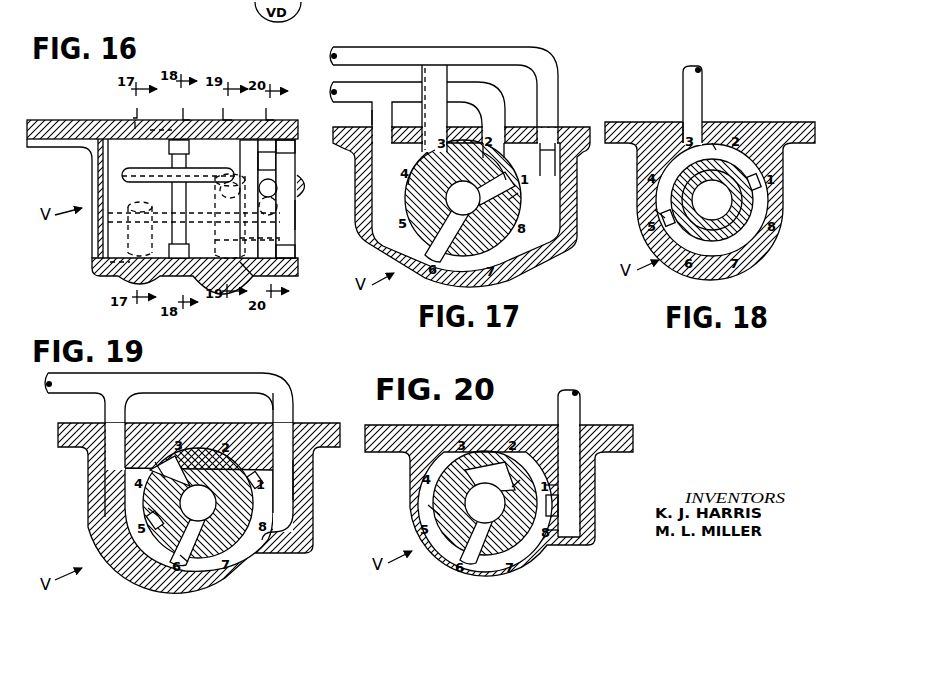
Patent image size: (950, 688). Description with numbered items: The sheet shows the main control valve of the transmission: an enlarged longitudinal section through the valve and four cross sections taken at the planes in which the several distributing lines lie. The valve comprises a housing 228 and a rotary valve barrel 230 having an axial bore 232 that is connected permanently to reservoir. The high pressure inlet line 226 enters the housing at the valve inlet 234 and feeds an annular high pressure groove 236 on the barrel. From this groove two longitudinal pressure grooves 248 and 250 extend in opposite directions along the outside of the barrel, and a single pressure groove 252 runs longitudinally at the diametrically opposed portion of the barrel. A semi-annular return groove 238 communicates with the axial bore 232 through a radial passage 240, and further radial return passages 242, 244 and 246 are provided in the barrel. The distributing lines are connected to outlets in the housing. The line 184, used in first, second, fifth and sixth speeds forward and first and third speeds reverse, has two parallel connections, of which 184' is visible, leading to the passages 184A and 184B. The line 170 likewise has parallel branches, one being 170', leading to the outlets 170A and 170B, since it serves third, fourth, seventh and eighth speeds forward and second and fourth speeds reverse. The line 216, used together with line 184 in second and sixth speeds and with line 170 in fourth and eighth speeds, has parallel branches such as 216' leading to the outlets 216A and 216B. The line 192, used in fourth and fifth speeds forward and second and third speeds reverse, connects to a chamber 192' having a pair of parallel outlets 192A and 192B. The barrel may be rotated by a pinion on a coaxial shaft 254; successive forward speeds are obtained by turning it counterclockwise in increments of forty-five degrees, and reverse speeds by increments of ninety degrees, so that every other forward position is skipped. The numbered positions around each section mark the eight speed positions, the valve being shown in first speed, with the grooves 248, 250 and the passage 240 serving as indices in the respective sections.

In FIG. 16, the distributing line 170 is at (152, 106).
In FIG. 17, the distributing line 170 is at (444, 86).
In FIG. 17, the parallel branch connection 170' is at (423, 100).
In FIG. 17, the valve passage or outlet 170A is at (437, 167).
In FIG. 16, the valve passage or outlet 170B is at (112, 268).
In FIG. 17, the valve passage or outlet 170B is at (555, 158).
In FIG. 16, the distributing line 184 is at (116, 115).
In FIG. 17, the distributing line 184 is at (400, 105).
In FIG. 17, the parallel connection 184' is at (338, 113).
In FIG. 16, the valve passage or distributing outlet 184A is at (296, 218).
In FIG. 17, the valve passage or distributing outlet 184B is at (487, 167).
In FIG. 16, the distributing line 192 is at (283, 107).
In FIG. 20, the distributing line 192 is at (593, 463).
In FIG. 20, the valve passage or chamber 192' is at (593, 503).
In FIG. 20, the branch or outlet 192A is at (558, 485).
In FIG. 20, the branch or outlet 192B is at (560, 530).
In FIG. 16, the distributing line 216 is at (239, 107).
In FIG. 19, the distributing line 216 is at (169, 380).
In FIG. 19, the parallel branch 216' is at (79, 404).
In FIG. 19, the valve passage or outlet 216A is at (105, 465).
In FIG. 19, the valve passage or outlet 216B is at (287, 475).
In FIG. 16, the pressure-receiving inlet line 226 is at (199, 107).
In FIG. 18, the pressure-receiving inlet line 226 is at (703, 80).
In FIG. 16, the housing 228 is at (57, 124).
In FIG. 17, the housing 228 is at (560, 250).
In FIG. 18, the housing 228 is at (763, 258).
In FIG. 19, the housing 228 is at (90, 483).
In FIG. 20, the housing 228 is at (410, 482).
In FIG. 16, the rotary valve barrel 230 is at (118, 149).
In FIG. 17, the rotary valve barrel 230 is at (440, 243).
In FIG. 18, the rotary valve barrel 230 is at (750, 210).
In FIG. 19, the rotary valve barrel 230 is at (208, 447).
In FIG. 20, the rotary valve barrel 230 is at (458, 550).
In FIG. 16, the axial bore 232 is at (98, 216).
In FIG. 17, the axial bore 232 is at (478, 207).
In FIG. 18, the axial bore 232 is at (727, 209).
In FIG. 19, the axial bore 232 is at (212, 512).
In FIG. 20, the axial bore 232 is at (499, 512).
In FIG. 16, the valve inlet 234 is at (146, 130).
In FIG. 18, the valve inlet 234 is at (683, 130).
In FIG. 16, the annular high pressure groove 236 is at (175, 149).
In FIG. 18, the annular high pressure groove 236 is at (714, 147).
In FIG. 16, the semi-annular reservoir or return groove 238 is at (270, 250).
In FIG. 20, the semi-annular reservoir or return groove 238 is at (518, 548).
In FIG. 16, the radial passage 240 is at (262, 173).
In FIG. 20, the radial passage 240 is at (512, 487).
In FIG. 16, the radial return passage 242 is at (152, 210).
In FIG. 17, the radial return passage 242 is at (503, 265).
In FIG. 16, the radial return passage 244 is at (235, 180).
In FIG. 19, the radial return passage 244 is at (162, 472).
In FIG. 16, the radial return passage 246 is at (258, 266).
In FIG. 19, the radial return passage 246 is at (183, 560).
In FIG. 16, the longitudinal pressure groove 248 is at (122, 173).
In FIG. 17, the longitudinal pressure groove 248 is at (518, 193).
In FIG. 16, the longitudinal pressure groove 250 is at (205, 172).
In FIG. 18, the longitudinal pressure groove 250 is at (762, 190).
In FIG. 19, the longitudinal pressure groove 250 is at (245, 478).
In FIG. 16, the single pressure groove 252 is at (270, 238).
In FIG. 18, the single pressure groove 252 is at (660, 215).
In FIG. 19, the single pressure groove 252 is at (150, 512).
In FIG. 20, the single pressure groove 252 is at (440, 512).
In FIG. 16, the coaxial shaft 254 is at (300, 181).